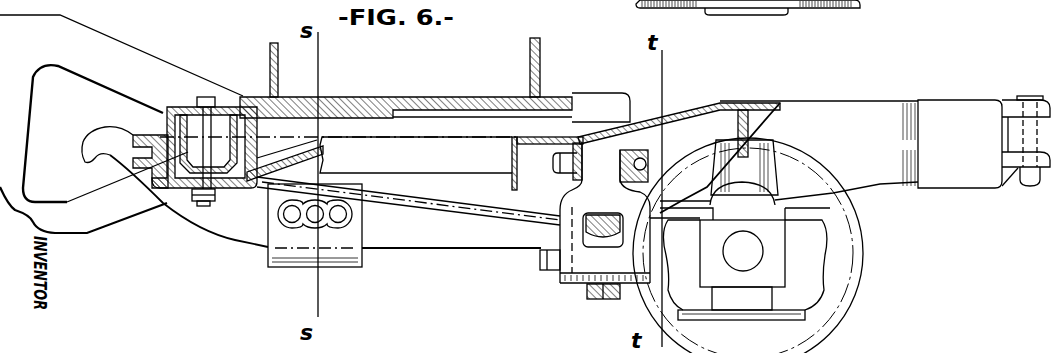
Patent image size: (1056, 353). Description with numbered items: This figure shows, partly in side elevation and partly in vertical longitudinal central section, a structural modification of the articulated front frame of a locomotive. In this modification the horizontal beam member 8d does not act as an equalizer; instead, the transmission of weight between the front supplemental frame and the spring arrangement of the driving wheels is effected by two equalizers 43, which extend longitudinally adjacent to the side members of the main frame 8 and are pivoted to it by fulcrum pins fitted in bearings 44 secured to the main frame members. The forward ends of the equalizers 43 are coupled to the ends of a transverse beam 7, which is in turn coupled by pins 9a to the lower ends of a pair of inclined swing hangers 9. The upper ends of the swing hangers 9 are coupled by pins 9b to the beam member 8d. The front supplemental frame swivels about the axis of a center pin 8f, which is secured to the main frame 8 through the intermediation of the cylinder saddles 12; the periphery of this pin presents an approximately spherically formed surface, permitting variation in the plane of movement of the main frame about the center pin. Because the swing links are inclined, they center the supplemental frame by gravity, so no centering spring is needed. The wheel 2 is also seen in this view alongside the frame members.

The wheel 2 is at (843, 290).
The transverse beam 7 is at (583, 288).
The main frame 8 is at (127, 53).
The horizontal beam member 8d is at (423, 200).
The center pin 8f is at (165, 120).
The inclined swing hangers 9 is at (587, 203).
The pins 9a is at (541, 258).
The pins 9b is at (565, 157).
The cylinder saddles 12 is at (452, 103).
The equalizers 43 is at (392, 238).
The bearings 44 is at (280, 241).